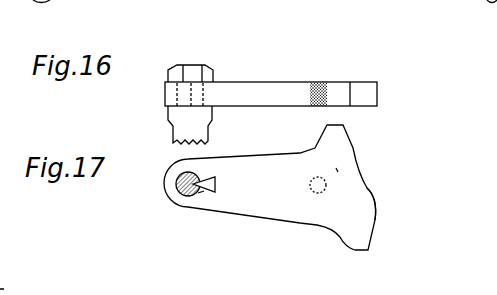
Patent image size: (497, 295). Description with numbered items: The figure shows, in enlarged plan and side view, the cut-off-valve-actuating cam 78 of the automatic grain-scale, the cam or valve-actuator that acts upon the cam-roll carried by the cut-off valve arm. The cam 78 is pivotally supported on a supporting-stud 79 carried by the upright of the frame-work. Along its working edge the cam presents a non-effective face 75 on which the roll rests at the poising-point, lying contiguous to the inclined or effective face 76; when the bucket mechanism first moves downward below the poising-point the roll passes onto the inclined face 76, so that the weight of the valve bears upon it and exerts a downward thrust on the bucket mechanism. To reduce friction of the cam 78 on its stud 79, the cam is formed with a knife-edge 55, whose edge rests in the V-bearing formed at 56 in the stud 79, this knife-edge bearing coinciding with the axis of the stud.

In FIG. 17, the knife-edge 55 is at (207, 180).
In FIG. 17, the V-bearing 56 is at (200, 196).
In FIG. 16, the non-effective face 75 is at (378, 90).
In FIG. 17, the non-effective face 75 is at (377, 217).
In FIG. 16, the inclined or effective face 76 is at (362, 95).
In FIG. 17, the inclined or effective face 76 is at (372, 188).
In FIG. 16, the valve-actuating cam 78 is at (330, 98).
In FIG. 17, the valve-actuating cam 78 is at (337, 170).
In FIG. 16, the supporting-stud 79 is at (194, 63).
In FIG. 17, the supporting-stud 79 is at (182, 195).